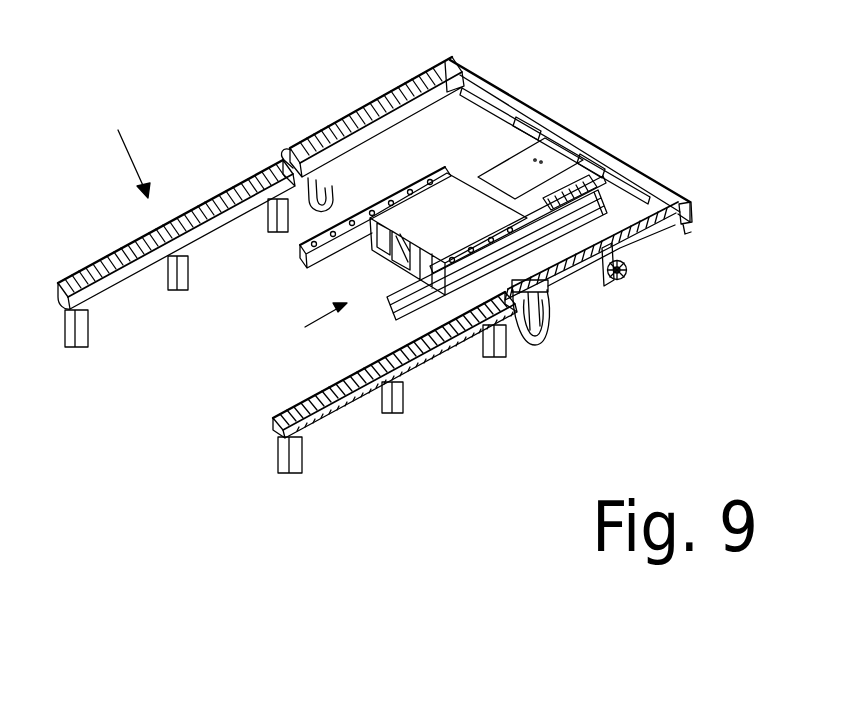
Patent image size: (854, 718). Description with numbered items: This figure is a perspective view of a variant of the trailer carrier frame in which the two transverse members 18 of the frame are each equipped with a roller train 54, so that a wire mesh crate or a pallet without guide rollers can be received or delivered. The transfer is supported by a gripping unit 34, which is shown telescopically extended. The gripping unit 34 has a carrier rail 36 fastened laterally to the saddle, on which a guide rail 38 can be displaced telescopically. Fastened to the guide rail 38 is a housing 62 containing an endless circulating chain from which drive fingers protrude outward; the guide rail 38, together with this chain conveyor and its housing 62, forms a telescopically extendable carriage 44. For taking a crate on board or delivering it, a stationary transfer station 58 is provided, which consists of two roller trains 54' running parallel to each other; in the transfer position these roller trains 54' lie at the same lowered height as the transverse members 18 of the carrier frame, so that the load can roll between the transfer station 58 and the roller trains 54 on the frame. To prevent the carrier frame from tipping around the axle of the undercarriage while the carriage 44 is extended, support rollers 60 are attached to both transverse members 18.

The transverse member 18 is at (640, 232).
The gripping unit 34 is at (391, 268).
The carrier rail 36 is at (610, 180).
The guide rail 38 is at (393, 313).
The carriage 44 is at (295, 263).
The roller train 54 is at (373, 123).
The roller train 54' is at (176, 206).
The stationary transfer station 58 is at (122, 142).
The support roller 60 is at (547, 342).
The housing 62 is at (494, 230).